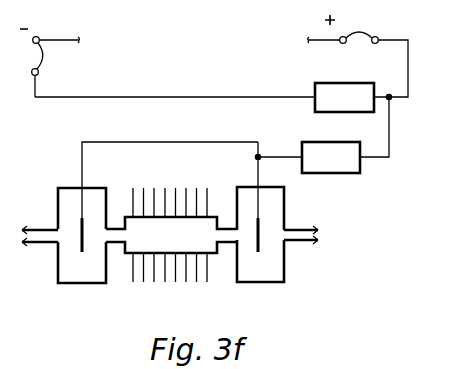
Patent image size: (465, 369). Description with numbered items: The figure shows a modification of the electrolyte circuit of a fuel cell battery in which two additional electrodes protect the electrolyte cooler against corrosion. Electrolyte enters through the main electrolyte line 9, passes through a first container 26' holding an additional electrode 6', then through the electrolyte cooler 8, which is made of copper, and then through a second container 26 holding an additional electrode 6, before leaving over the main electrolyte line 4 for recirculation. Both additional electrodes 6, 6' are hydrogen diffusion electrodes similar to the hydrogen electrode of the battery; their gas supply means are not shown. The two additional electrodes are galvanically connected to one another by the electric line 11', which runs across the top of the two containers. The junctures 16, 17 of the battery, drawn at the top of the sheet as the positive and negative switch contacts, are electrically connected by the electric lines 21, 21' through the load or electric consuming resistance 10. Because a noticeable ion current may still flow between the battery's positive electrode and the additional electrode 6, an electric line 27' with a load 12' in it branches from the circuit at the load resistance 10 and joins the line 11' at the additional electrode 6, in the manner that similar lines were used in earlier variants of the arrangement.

The juncture 17 is at (29, 56).
The juncture 16 is at (340, 46).
The electric line 21 is at (406, 68).
The electric line 21' is at (175, 85).
The load or electric consuming resistance 10 is at (315, 106).
The electric line 27' is at (394, 125).
The load 12' is at (333, 146).
The electric line 11' is at (192, 166).
The container 26' is at (70, 252).
The additional electrode 6' is at (53, 259).
The main electrolyte line 9 is at (36, 243).
The electrolyte cooler 8 is at (166, 279).
The container 26 is at (271, 251).
The additional electrode 6 is at (240, 248).
The main electrolyte line 4 is at (300, 242).